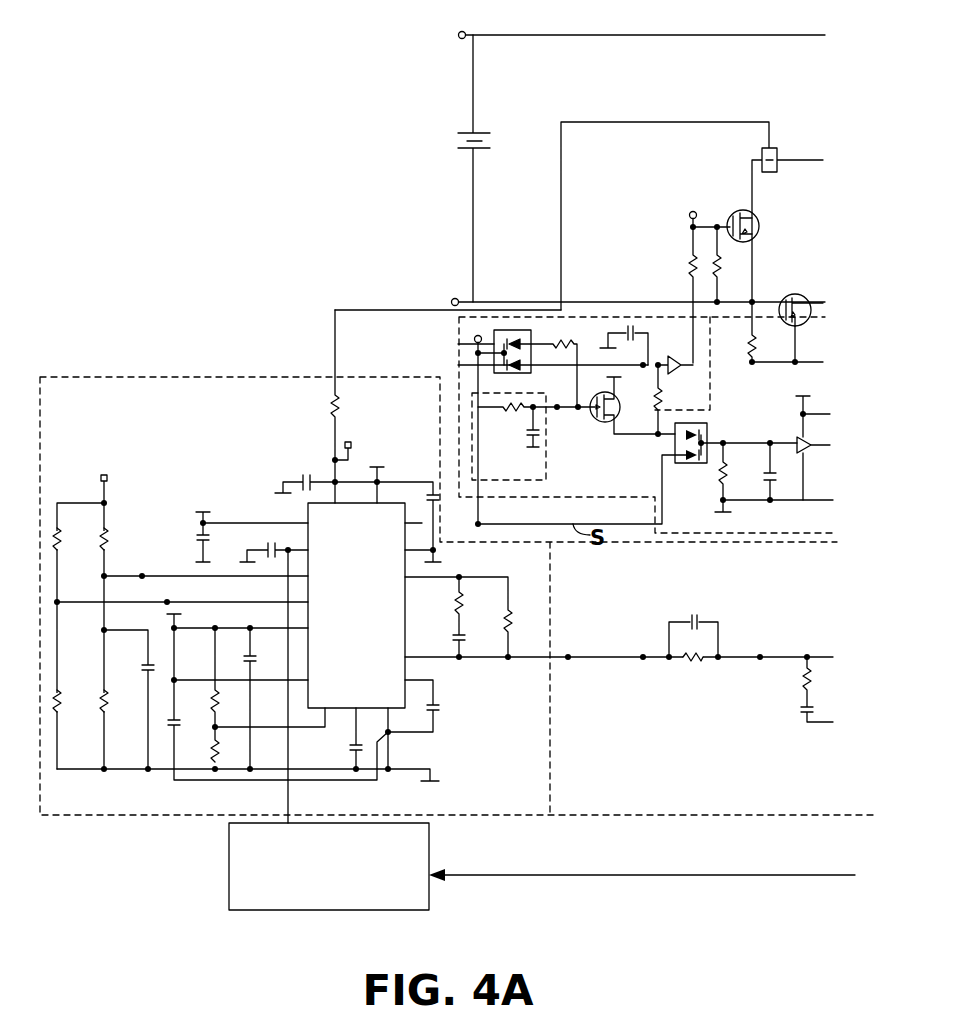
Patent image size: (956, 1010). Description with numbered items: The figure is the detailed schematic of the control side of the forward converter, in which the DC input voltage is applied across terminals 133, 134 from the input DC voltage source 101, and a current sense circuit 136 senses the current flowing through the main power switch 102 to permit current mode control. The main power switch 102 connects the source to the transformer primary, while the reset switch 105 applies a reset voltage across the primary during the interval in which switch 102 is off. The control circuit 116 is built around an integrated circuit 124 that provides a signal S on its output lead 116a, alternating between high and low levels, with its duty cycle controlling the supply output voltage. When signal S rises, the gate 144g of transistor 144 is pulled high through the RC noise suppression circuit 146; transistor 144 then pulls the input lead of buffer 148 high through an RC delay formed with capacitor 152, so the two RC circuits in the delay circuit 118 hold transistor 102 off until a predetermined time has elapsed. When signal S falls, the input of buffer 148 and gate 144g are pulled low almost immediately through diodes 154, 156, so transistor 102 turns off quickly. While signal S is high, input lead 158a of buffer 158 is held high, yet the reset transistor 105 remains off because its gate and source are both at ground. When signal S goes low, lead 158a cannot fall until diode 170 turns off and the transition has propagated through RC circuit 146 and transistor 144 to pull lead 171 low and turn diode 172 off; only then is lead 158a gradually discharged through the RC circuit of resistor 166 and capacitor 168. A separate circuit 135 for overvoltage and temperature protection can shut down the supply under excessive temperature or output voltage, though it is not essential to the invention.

The terminal 133 is at (535, 35).
The input DC voltage source 101 is at (470, 150).
The current sense circuit 136 is at (778, 150).
The main power switch 102 is at (757, 220).
The reset switch 105 is at (802, 294).
The diode 156 is at (497, 338).
The delay circuit 118 is at (458, 344).
The terminal 134 is at (492, 302).
The capacitor 152 is at (627, 330).
The buffer 148 is at (677, 355).
The diode 154 is at (458, 365).
The diode 172 is at (690, 425).
The buffer 158 is at (800, 441).
The input lead 158a is at (783, 442).
The RC noise suppression circuit 146 is at (527, 461).
The gate 144g is at (594, 420).
The lead 171 is at (672, 433).
The transistor 144 is at (609, 423).
The diode 170 is at (697, 462).
The resistor 166 is at (726, 472).
The capacitor 168 is at (777, 478).
The output lead 116a is at (422, 523).
The integrated circuit 124 is at (377, 621).
The control circuit 116 is at (133, 815).
The shutdown circuit 135 is at (431, 893).